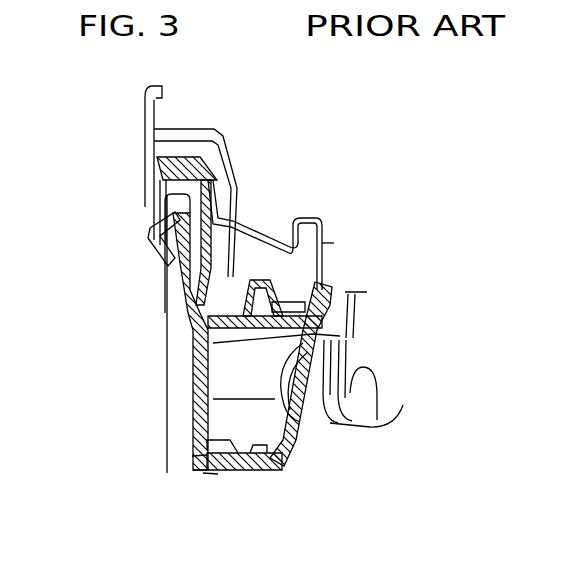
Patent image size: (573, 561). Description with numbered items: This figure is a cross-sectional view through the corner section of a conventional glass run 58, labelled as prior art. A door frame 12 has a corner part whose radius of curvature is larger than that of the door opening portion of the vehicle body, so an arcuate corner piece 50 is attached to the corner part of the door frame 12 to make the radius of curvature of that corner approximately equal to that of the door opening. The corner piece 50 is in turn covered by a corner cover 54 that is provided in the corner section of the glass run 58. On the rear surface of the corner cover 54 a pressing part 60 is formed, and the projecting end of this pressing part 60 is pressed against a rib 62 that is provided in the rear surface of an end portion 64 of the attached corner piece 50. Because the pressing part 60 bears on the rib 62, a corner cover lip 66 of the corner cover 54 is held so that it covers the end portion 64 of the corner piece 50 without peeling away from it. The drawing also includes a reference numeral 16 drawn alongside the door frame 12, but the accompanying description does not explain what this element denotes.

The door frame 12 is at (323, 245).
The door panel 16 is at (165, 339).
The corner piece 50 is at (287, 437).
The corner cover 54 is at (200, 388).
The glass run 58 is at (149, 257).
The pressing part 60 is at (200, 456).
The rib 62 is at (281, 470).
The end portion 64 is at (203, 473).
The corner cover lip 66 is at (197, 470).